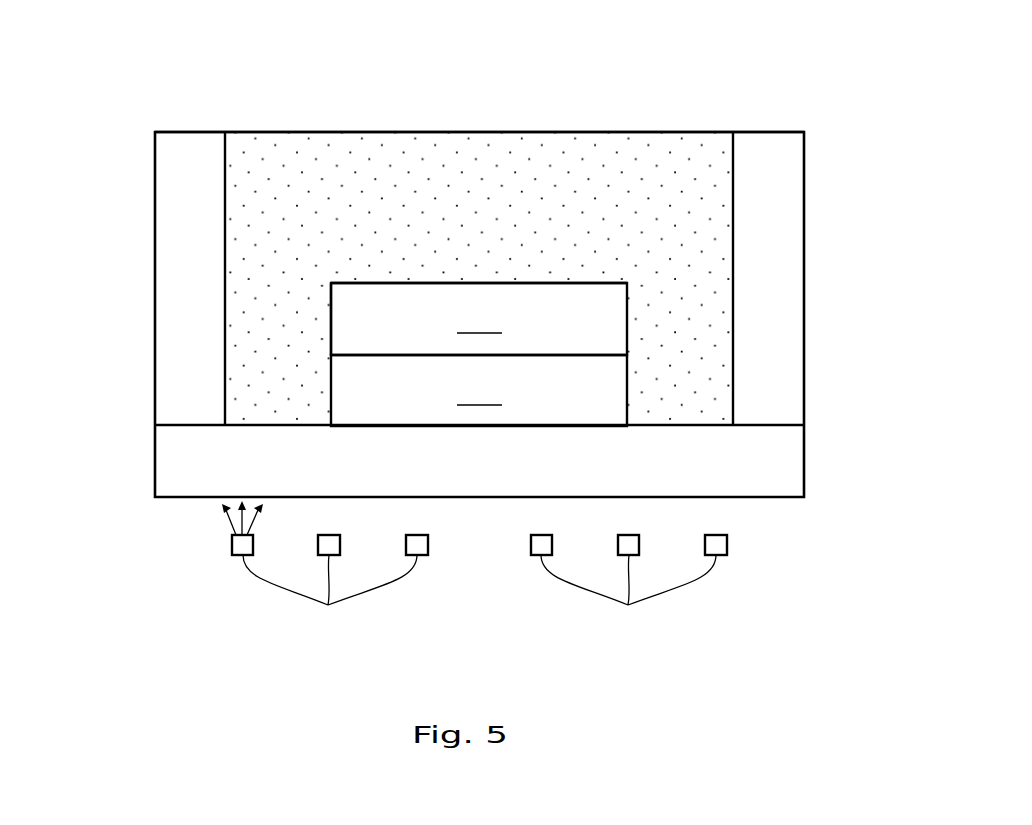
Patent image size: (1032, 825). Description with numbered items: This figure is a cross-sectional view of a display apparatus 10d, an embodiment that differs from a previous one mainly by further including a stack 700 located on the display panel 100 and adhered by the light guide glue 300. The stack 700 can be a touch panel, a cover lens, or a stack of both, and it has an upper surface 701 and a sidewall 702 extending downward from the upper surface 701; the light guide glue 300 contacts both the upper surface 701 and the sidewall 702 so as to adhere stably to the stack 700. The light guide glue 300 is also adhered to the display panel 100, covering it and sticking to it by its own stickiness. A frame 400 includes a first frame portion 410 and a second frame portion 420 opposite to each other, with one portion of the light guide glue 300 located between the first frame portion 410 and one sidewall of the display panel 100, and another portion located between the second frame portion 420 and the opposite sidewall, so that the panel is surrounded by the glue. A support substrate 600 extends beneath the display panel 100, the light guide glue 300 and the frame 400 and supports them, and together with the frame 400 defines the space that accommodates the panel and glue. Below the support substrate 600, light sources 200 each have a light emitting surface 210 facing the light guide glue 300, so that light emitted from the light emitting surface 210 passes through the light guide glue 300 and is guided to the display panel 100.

The display apparatus 10d is at (88, 36).
The display panel 100 is at (479, 390).
The light sources 200 is at (485, 587).
The light emitting surface 210 is at (232, 545).
The light guide glue 300 is at (325, 157).
The frame 400 is at (124, 194).
The first frame portion 410 is at (165, 278).
The second frame portion 420 is at (792, 280).
The support substrate 600 is at (792, 463).
The stack 700 is at (479, 319).
The upper surface 701 is at (380, 284).
The sidewall 702 is at (331, 322).